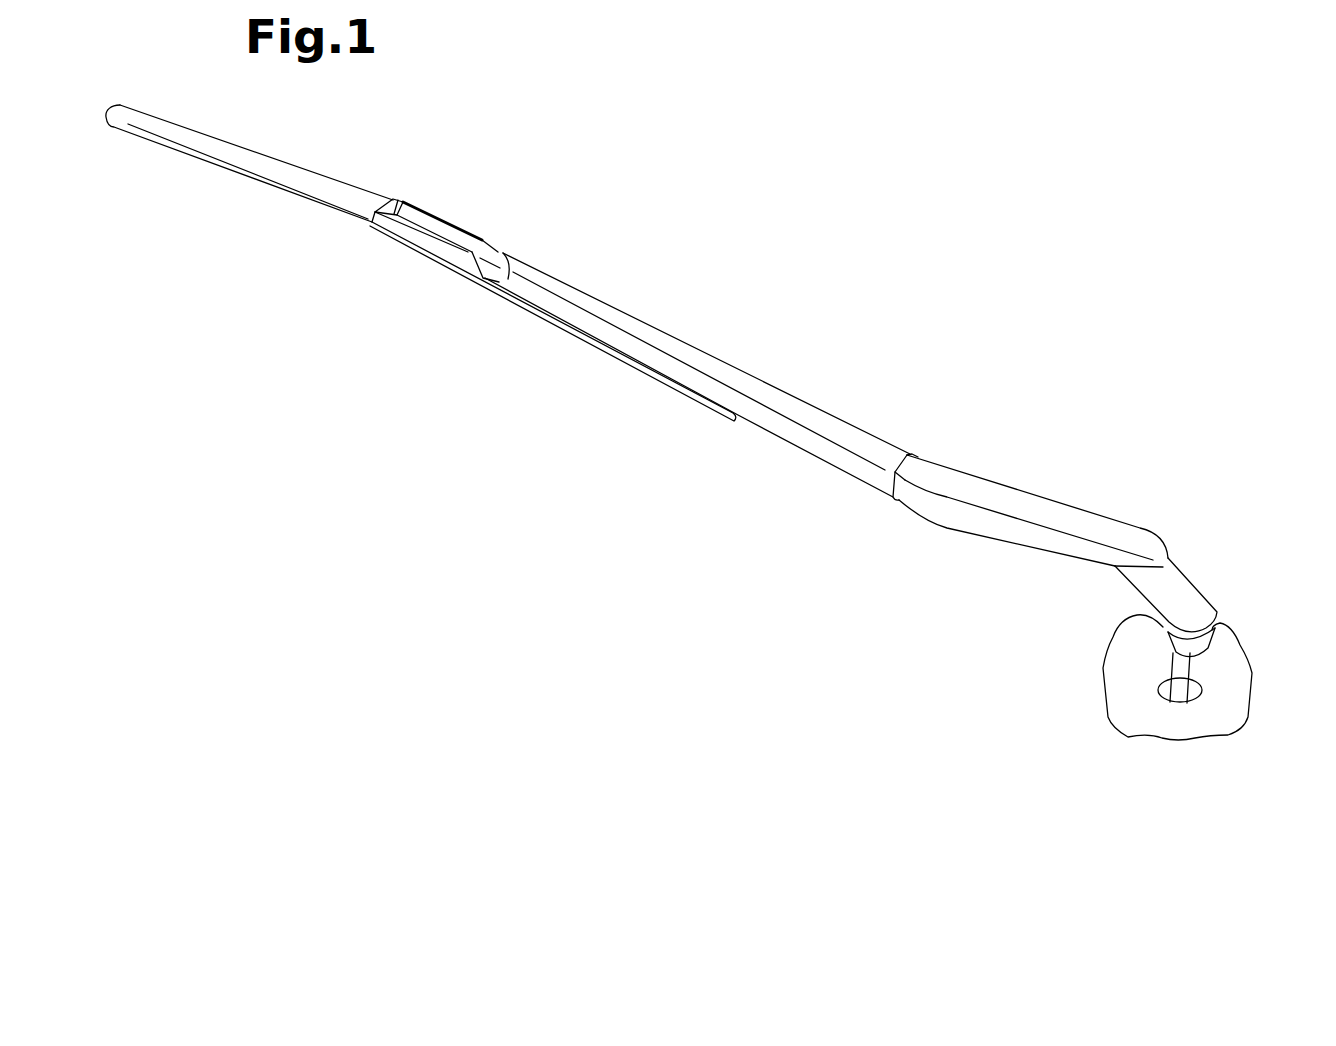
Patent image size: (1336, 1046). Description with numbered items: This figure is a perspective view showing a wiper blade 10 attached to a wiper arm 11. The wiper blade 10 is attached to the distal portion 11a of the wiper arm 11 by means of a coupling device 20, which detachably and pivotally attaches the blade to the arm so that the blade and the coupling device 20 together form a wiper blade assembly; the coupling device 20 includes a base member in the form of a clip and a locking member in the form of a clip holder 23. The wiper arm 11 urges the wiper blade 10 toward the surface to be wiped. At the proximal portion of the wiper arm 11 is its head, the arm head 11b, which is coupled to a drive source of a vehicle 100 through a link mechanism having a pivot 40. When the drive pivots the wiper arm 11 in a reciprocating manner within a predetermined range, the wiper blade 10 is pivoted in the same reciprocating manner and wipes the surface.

The wiper blade 10 is at (345, 218).
The wiper arm 11 is at (851, 431).
The distal portion 11a is at (522, 267).
The arm head 11b is at (995, 528).
The coupling device 20 is at (553, 277).
The clip holder 23 is at (497, 248).
The pivot 40 is at (1183, 670).
The vehicle 100 is at (1192, 728).